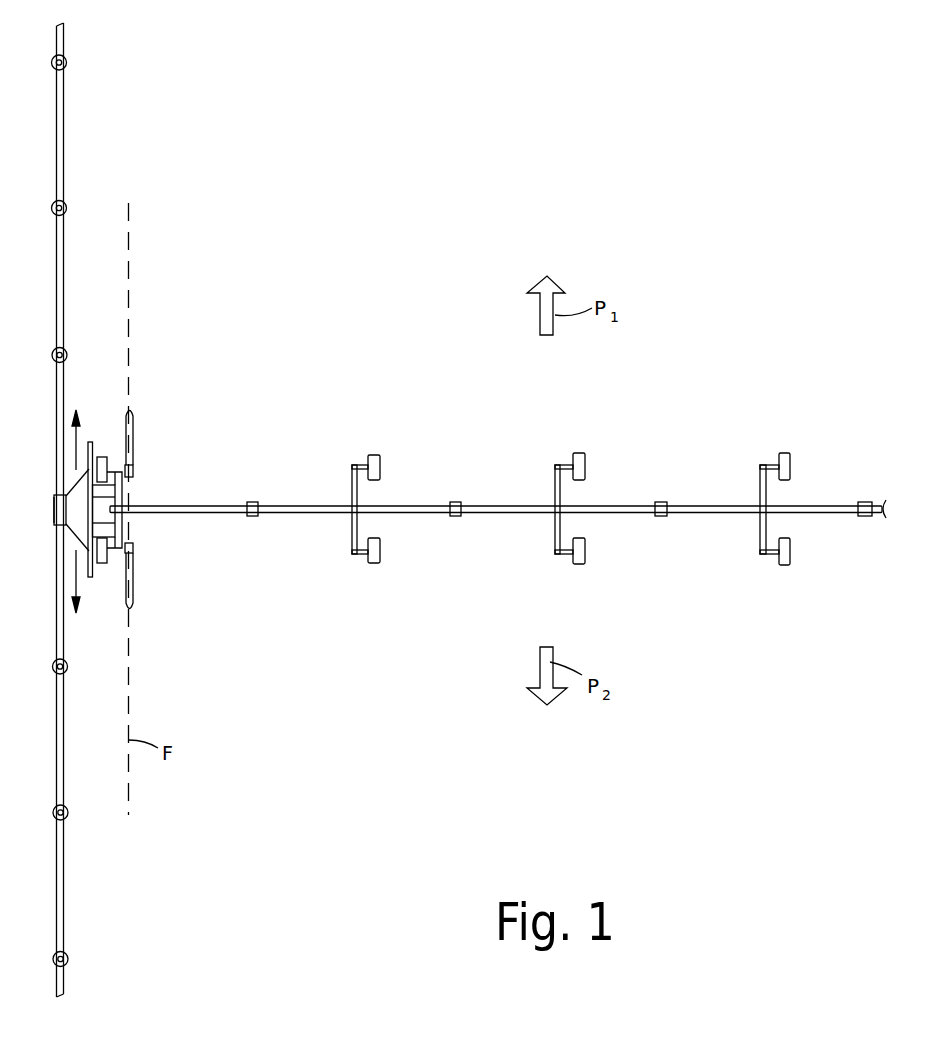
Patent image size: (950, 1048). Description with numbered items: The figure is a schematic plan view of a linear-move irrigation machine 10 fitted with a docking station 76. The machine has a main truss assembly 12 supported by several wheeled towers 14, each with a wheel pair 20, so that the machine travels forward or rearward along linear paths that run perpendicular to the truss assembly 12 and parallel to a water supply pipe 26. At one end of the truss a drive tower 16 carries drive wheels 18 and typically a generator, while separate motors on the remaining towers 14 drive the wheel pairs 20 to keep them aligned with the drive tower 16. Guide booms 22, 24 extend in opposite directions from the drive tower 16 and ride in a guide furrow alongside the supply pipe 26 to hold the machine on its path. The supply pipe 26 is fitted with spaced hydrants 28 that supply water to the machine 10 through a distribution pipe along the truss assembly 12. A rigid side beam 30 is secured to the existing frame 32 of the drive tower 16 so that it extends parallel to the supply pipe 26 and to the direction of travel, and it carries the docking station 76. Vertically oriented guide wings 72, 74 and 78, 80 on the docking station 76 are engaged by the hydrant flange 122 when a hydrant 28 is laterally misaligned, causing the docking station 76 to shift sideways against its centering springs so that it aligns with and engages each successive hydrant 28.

The linear-move machine 10 is at (703, 352).
The main truss assembly 12 is at (605, 503).
The wheeled towers 14 is at (353, 490).
The drive tower 16 is at (130, 493).
The drive wheels 18 is at (102, 457).
The wheel pairs 20 is at (386, 462).
The guide boom 22 is at (128, 447).
The guide boom 24 is at (133, 590).
The water supply pipe 26 is at (60, 305).
The hydrants 28 is at (67, 62).
The side beam 30 is at (90, 578).
The frame 32 is at (130, 526).
The vertically-oriented guide wing 72 is at (55, 498).
The vertically-oriented guide wing 74 is at (82, 480).
The docking station 76 is at (52, 510).
The vertically-oriented guide wing 78 is at (56, 522).
The vertically-oriented guide wing 80 is at (72, 535).
The hydrant flange 122 is at (52, 357).